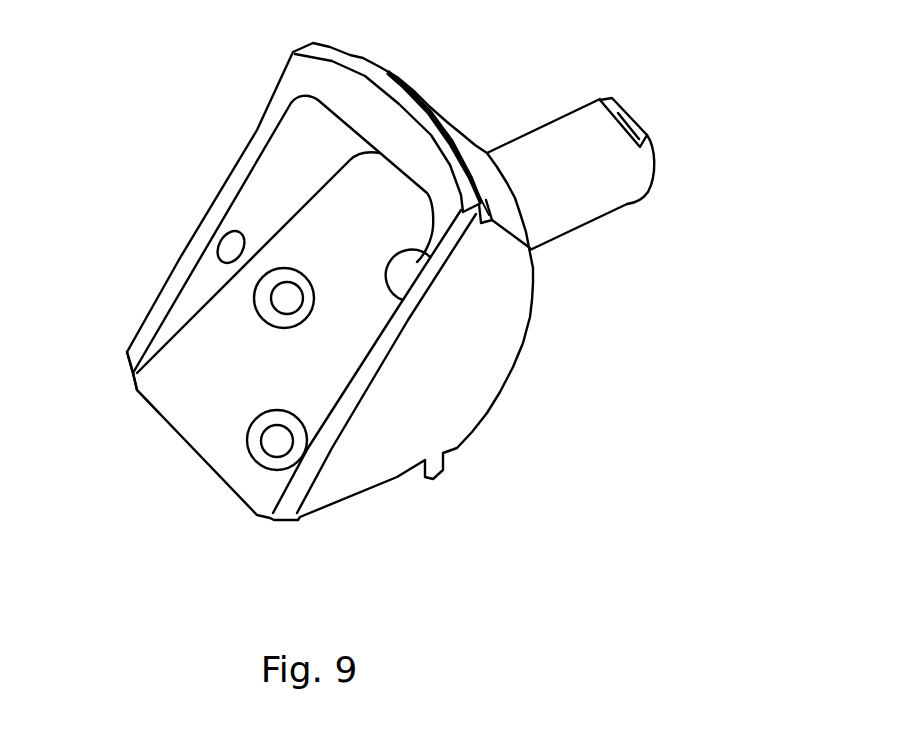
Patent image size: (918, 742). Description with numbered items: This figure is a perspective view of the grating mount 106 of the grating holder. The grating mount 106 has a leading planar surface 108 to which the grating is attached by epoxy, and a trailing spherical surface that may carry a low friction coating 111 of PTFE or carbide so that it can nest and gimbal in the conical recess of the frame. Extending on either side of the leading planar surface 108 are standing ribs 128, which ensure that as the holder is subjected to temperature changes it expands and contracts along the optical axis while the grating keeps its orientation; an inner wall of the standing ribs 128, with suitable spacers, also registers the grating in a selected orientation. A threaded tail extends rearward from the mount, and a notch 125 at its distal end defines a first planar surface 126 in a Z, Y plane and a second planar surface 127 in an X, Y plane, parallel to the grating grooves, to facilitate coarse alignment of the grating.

The grating mount 106 is at (683, 344).
The leading planar surface 108 is at (170, 387).
The low friction coating 111 is at (440, 115).
The notch 125 is at (703, 91).
The first planar surface 126 is at (648, 136).
The second planar surface 127 is at (624, 110).
The standing ribs 128 is at (272, 123).